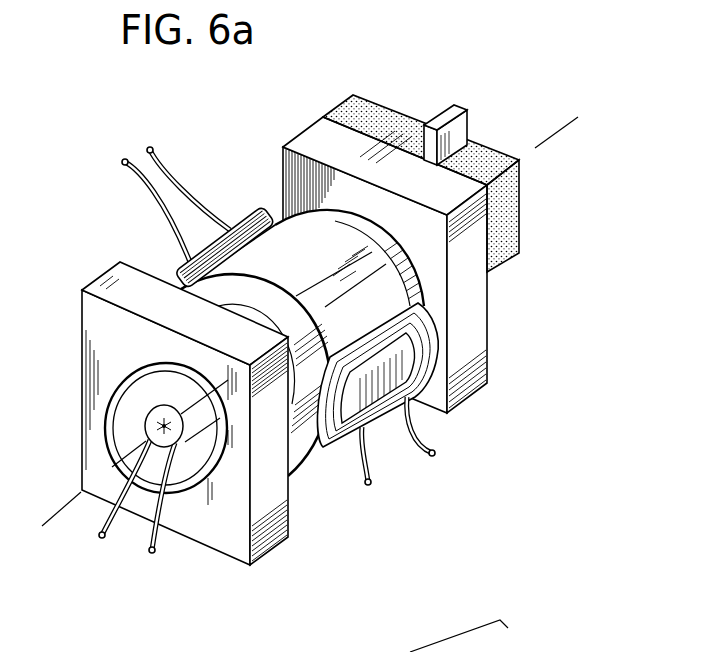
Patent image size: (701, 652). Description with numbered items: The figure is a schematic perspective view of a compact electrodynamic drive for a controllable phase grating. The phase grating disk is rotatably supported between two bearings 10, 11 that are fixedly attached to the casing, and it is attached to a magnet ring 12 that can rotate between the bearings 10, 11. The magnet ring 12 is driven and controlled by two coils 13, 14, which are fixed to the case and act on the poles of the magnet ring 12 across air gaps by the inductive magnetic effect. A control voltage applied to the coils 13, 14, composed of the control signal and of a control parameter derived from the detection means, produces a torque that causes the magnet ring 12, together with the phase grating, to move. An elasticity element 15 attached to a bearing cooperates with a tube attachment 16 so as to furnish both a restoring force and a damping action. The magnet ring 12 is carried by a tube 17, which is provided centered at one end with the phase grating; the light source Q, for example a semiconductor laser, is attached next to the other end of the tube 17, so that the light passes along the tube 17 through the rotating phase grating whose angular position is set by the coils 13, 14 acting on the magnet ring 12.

The bearing 10 is at (473, 367).
The bearing 11 is at (228, 547).
The magnet ring 12 is at (300, 450).
The coil 13 is at (247, 216).
The coil 14 is at (390, 420).
The elasticity element 15 is at (491, 172).
The tube attachment 16 is at (453, 115).
The tube 17 is at (412, 275).
The light source Q is at (147, 420).